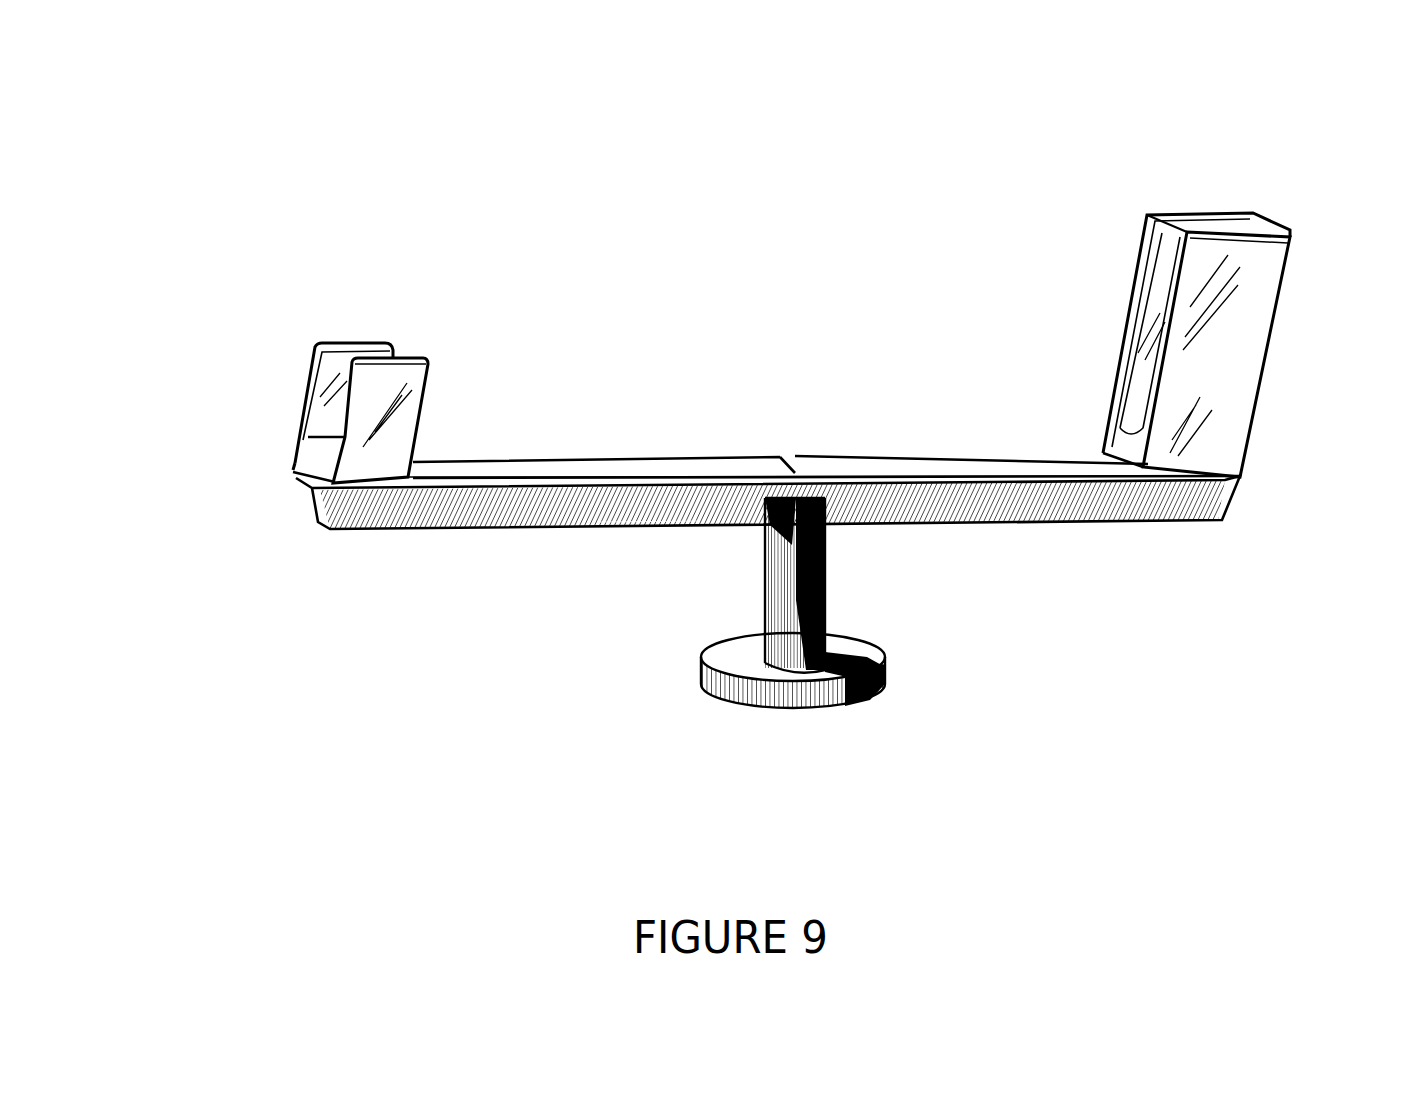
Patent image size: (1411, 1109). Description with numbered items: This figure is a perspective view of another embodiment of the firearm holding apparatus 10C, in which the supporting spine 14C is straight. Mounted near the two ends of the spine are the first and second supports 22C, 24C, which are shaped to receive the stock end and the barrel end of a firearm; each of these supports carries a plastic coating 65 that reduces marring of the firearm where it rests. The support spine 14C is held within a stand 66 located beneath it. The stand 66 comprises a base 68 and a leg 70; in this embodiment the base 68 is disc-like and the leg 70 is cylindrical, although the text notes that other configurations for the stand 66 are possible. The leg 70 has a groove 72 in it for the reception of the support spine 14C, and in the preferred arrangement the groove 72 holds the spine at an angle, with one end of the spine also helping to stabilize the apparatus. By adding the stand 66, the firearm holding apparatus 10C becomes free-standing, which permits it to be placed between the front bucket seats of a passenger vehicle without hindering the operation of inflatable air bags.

The firearm holding apparatus 10C is at (386, 178).
The supporting spine 14C is at (457, 515).
The first support 22C is at (1235, 315).
The second support 24C is at (303, 403).
The plastic coating 65 is at (1120, 445).
The stand 66 is at (813, 563).
The base 68 is at (740, 670).
The leg 70 is at (770, 578).
The groove 72 is at (640, 522).